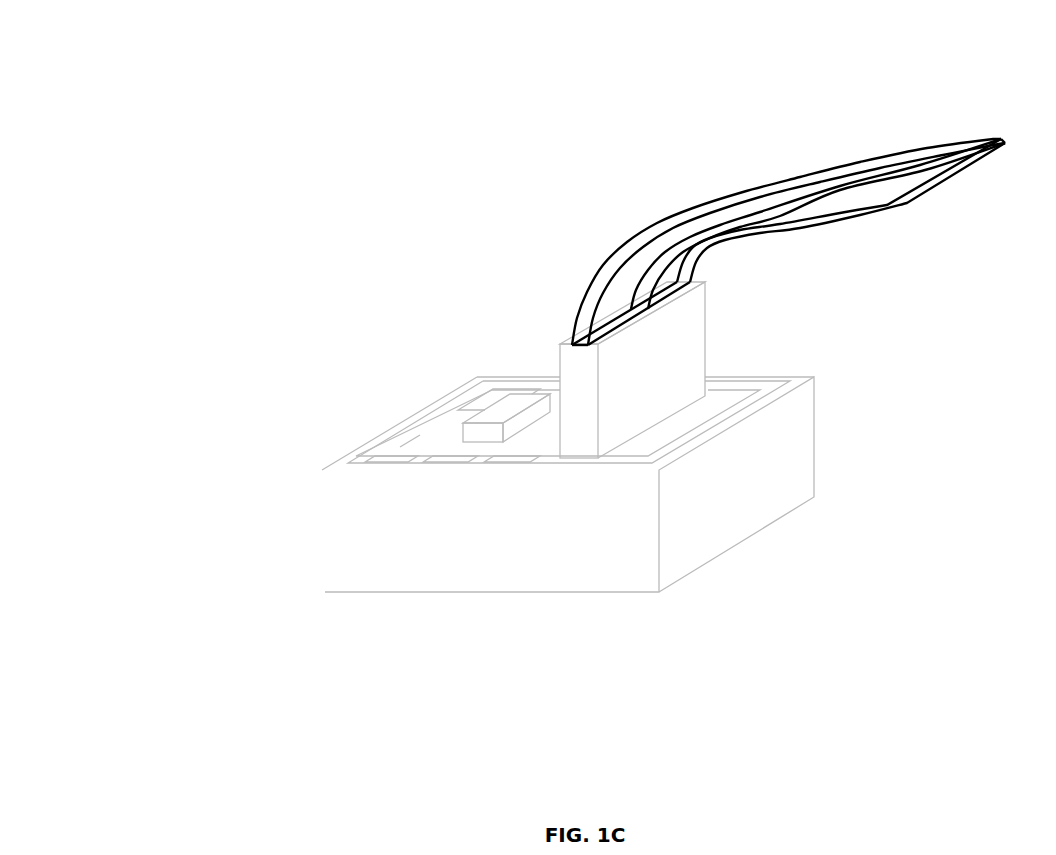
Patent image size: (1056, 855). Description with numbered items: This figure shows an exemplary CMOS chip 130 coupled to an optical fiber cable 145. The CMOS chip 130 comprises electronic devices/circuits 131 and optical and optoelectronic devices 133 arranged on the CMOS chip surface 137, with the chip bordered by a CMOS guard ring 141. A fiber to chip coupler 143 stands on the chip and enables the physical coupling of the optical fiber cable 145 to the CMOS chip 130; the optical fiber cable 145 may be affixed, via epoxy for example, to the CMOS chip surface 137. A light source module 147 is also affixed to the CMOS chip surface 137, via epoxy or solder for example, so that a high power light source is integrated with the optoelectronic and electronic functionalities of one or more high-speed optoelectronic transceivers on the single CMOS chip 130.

The CMOS chip 130 is at (192, 87).
The electronic devices/circuits 131 is at (505, 478).
The optical and optoelectronic devices 133 is at (419, 426).
The CMOS chip surface 137 is at (445, 410).
The CMOS guard ring 141 is at (804, 439).
The fiber to chip coupler 143 is at (710, 311).
The optical fiber cable 145 is at (733, 186).
The light source module 147 is at (497, 379).